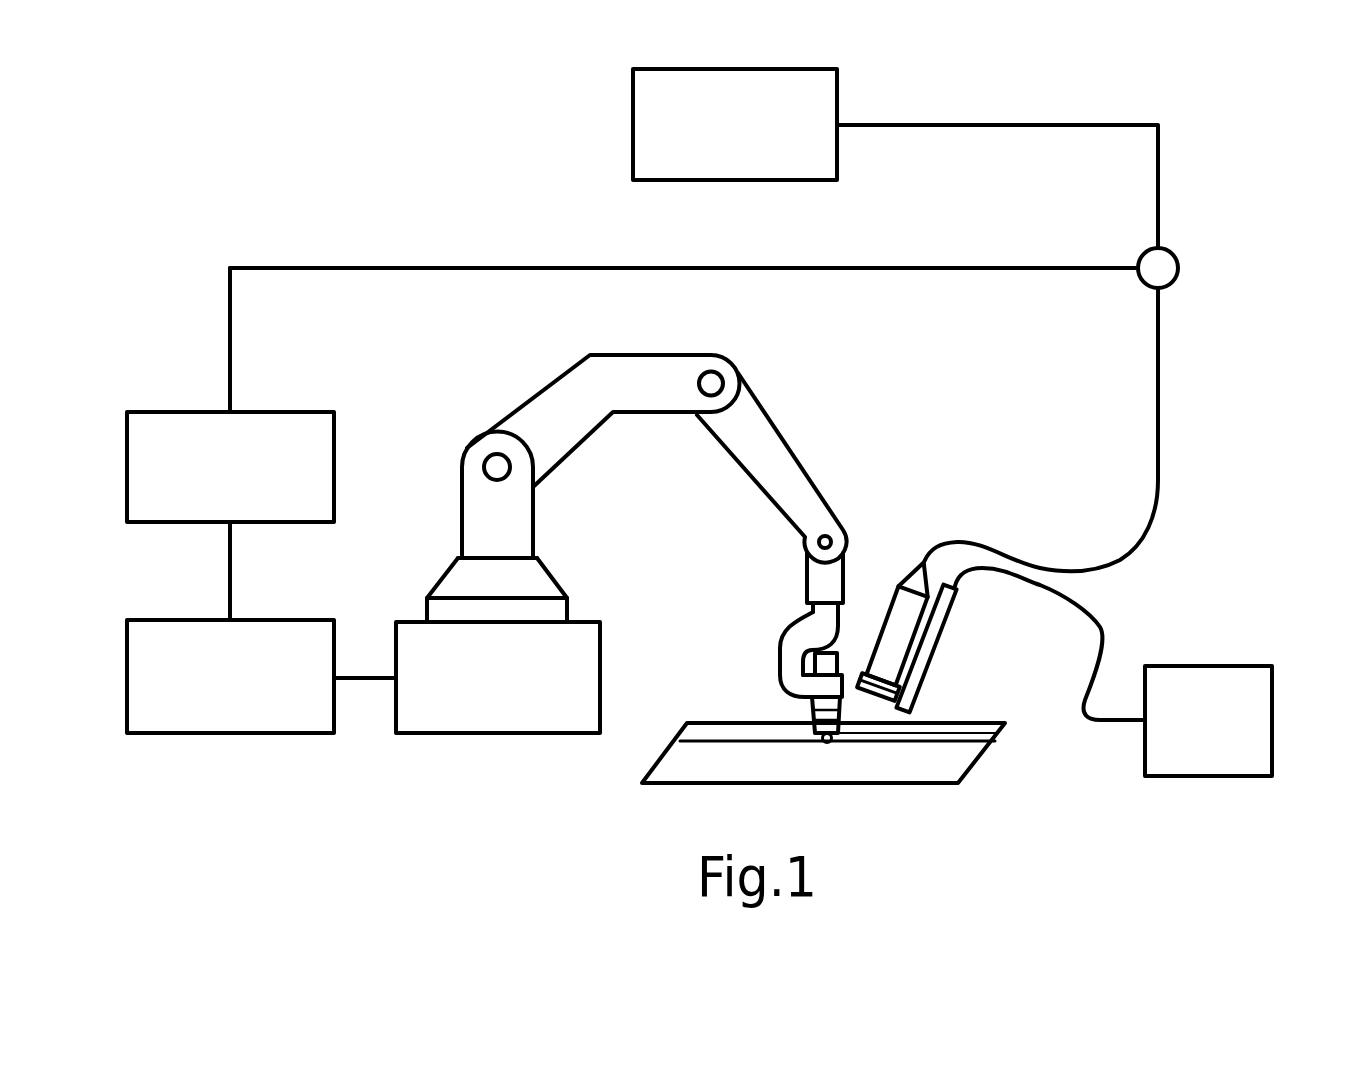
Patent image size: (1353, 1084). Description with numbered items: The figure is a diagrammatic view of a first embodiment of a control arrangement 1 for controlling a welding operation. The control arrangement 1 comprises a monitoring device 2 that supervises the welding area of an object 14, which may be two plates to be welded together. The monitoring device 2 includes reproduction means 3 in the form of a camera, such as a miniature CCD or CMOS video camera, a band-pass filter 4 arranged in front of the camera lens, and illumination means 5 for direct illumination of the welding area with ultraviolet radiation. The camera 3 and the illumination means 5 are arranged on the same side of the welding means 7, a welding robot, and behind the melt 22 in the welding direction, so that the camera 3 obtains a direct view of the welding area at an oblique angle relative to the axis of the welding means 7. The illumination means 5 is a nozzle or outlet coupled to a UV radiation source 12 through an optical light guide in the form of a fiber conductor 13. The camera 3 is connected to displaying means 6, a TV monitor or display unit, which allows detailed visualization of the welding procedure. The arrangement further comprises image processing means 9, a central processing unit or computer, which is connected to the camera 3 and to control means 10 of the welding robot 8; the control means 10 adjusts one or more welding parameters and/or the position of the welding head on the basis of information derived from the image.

The control arrangement 1 is at (337, 145).
The monitoring device 2 is at (1010, 514).
The reproduction means 3 is at (887, 633).
The band-pass filter 4 is at (810, 717).
The illumination means 5 is at (935, 627).
The displaying means 6 is at (647, 122).
The welding means 7 is at (777, 458).
The welding robot 8 is at (511, 714).
The image processing means 9 is at (200, 431).
The control means 10 is at (236, 714).
The UV radiation source 12 is at (1203, 765).
The fiber conductor 13 is at (1100, 625).
The object 14 is at (957, 767).
The melt 22 is at (831, 744).